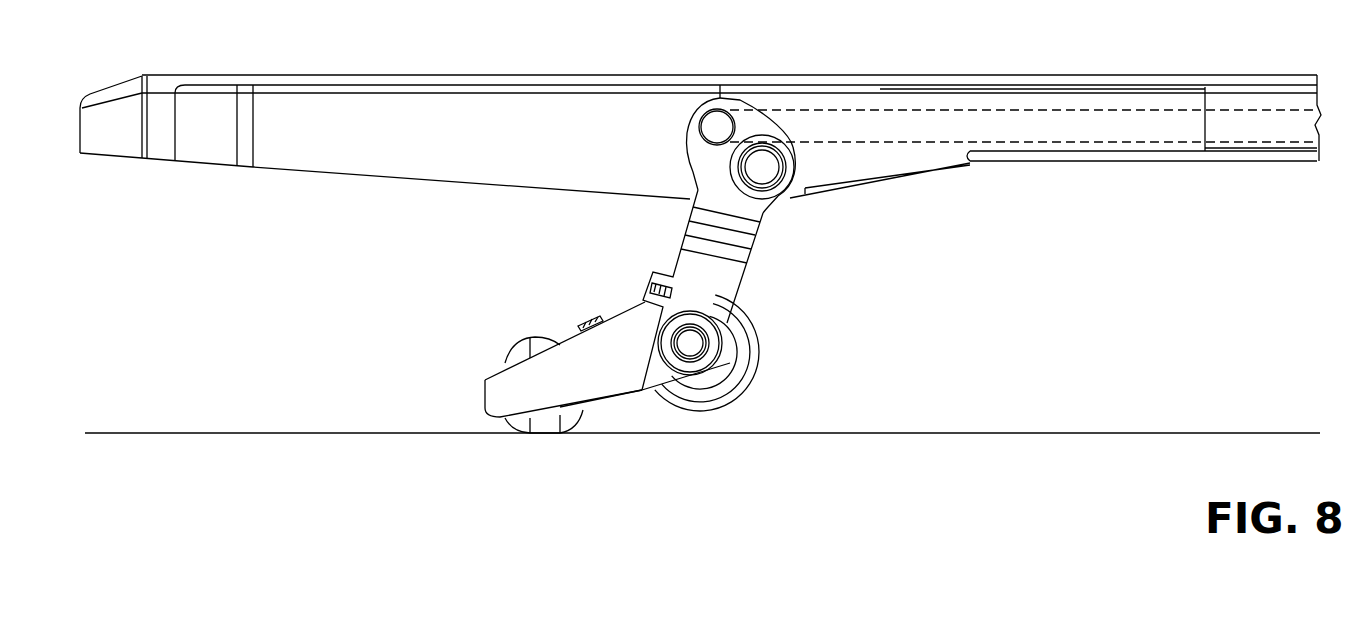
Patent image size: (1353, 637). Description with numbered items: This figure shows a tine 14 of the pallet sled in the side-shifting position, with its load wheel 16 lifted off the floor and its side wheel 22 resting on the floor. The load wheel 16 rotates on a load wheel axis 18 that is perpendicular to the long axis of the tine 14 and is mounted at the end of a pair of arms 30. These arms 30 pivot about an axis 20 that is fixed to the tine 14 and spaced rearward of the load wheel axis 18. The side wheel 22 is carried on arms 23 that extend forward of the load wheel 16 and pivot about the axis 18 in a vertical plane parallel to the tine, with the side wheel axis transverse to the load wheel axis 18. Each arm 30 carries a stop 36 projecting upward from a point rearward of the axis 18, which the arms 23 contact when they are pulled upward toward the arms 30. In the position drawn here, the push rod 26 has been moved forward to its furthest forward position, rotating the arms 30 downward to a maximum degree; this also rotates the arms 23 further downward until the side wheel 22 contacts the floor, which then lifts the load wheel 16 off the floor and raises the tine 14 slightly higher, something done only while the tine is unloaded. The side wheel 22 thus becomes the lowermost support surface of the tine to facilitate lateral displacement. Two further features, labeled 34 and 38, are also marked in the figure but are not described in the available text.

The tine 14 is at (892, 75).
The load wheel 16 is at (736, 398).
The load wheel axis 18 is at (708, 365).
The axis 20 is at (777, 200).
The side wheel 22 is at (553, 434).
The arms 23 is at (617, 400).
The push rod 26 is at (1015, 110).
The arms 30 is at (745, 270).
The pedal 34 is at (585, 320).
The stop 36 is at (650, 290).
The aperture 38 is at (703, 108).